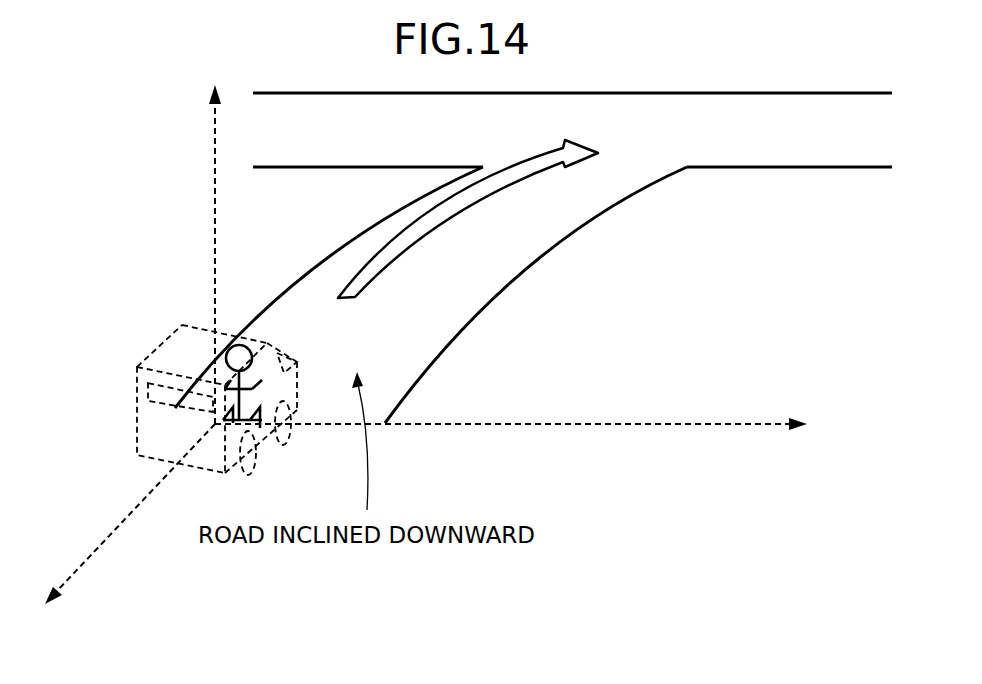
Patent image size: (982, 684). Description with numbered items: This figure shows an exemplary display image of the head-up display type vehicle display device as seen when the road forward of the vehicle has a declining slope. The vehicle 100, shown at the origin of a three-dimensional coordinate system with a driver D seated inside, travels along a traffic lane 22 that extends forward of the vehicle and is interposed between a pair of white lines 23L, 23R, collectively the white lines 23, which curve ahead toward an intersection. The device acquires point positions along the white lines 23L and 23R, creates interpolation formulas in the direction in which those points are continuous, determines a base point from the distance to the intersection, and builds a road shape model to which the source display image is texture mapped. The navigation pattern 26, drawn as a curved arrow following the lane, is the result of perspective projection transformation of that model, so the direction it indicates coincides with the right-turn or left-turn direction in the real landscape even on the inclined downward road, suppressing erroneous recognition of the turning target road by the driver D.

The traffic lane 22 is at (525, 266).
The white lines 23 is at (431, 295).
The left white line 23L is at (321, 258).
The right white line 23R is at (462, 333).
The navigation pattern 26 is at (510, 183).
The vehicle 100 is at (137, 393).
The driver D is at (247, 345).